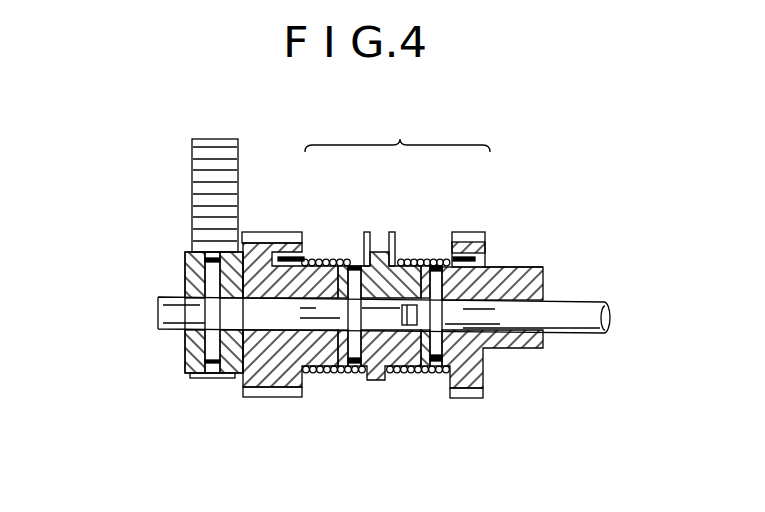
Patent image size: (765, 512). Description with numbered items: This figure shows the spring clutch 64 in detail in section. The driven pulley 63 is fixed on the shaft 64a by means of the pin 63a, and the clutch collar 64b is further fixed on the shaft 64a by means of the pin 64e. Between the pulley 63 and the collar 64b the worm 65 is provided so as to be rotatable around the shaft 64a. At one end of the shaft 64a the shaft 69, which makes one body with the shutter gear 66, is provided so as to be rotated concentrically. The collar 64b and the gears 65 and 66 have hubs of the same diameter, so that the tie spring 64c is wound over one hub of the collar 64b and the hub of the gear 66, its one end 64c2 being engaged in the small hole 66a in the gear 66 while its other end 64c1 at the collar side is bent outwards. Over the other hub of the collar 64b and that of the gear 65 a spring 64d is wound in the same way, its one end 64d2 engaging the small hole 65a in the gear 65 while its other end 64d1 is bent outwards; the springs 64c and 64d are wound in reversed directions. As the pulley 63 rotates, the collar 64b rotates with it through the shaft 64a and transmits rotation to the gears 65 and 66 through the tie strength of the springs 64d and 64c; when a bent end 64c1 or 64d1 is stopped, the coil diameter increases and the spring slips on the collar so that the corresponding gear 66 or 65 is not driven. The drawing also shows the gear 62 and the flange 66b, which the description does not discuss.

The gear 62 is at (213, 140).
The driven pulley 63 is at (185, 353).
The pin 63a is at (183, 270).
The spring clutch 64 is at (413, 132).
The shaft 64a is at (279, 318).
The clutch collar 64b is at (383, 258).
The tie spring 64c is at (401, 372).
The bent end of spring 64c 64c1 is at (393, 258).
The end of spring 64c 64c2 is at (465, 256).
The spring 64d is at (336, 371).
The bent end of spring 64d 64d1 is at (368, 258).
The end of spring 64d 64d2 is at (304, 258).
The pin 64e is at (356, 265).
The worm 65 is at (257, 243).
The small hole 65a is at (283, 250).
The shutter gear 66 is at (470, 252).
The small hole 66a is at (480, 256).
The housing flange 66b is at (532, 282).
The shaft 69 is at (567, 310).